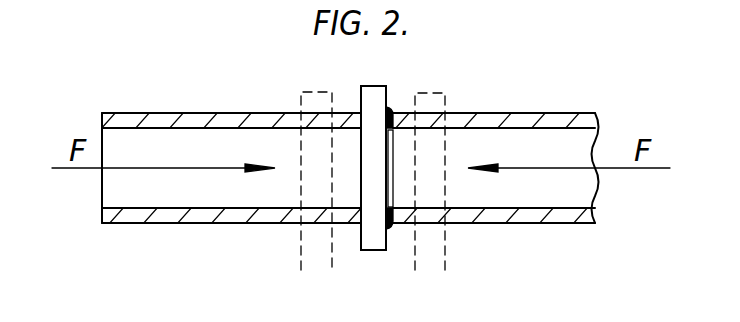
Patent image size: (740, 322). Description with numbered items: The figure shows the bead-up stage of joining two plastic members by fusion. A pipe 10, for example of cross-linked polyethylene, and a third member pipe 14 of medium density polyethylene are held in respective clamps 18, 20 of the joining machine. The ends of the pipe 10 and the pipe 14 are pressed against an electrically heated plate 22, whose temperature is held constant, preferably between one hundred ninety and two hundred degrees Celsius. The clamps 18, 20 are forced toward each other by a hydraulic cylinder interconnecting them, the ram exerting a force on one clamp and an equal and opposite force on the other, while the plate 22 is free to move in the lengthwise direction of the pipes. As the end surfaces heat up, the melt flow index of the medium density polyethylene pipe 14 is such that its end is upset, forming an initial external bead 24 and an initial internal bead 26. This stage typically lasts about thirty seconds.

The pipe 10 is at (195, 212).
The third member pipe 14 is at (540, 221).
The clamp 18 is at (307, 238).
The clamp 20 is at (440, 245).
The electrically heated plate 22 is at (371, 92).
The external bead 24 is at (390, 110).
The internal bead 26 is at (393, 147).